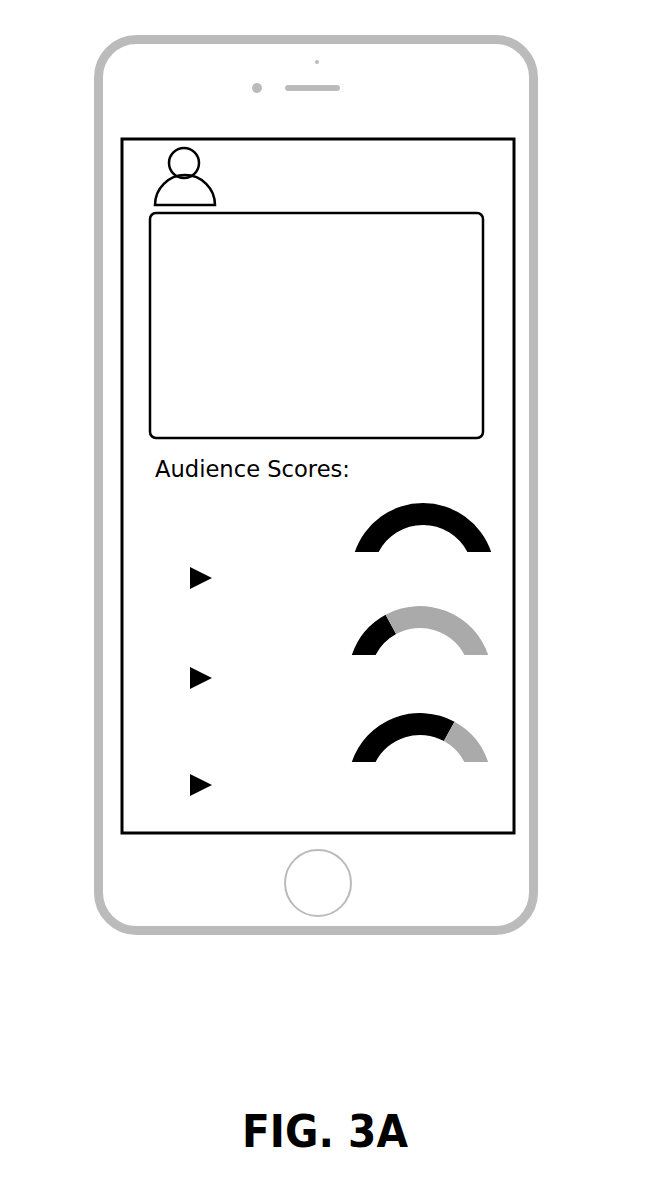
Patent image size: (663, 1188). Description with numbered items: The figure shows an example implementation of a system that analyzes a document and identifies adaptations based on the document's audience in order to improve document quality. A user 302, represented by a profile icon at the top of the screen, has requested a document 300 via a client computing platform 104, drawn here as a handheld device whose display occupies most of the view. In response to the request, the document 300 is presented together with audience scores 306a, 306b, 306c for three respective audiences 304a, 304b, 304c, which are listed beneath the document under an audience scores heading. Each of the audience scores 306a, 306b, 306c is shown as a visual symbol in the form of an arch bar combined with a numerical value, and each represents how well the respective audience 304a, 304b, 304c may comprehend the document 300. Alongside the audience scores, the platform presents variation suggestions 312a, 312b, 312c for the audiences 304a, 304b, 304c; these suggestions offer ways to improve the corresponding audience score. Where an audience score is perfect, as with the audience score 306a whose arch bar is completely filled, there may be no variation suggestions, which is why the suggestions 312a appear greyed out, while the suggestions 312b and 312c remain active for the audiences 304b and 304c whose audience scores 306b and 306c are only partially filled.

The client computing platform 104 is at (515, 48).
The document 300 is at (316, 325).
The user 302 is at (163, 182).
The audience 304a is at (238, 530).
The audience 304b is at (235, 634).
The audience 304c is at (235, 739).
The audience score 306a is at (483, 530).
The audience score 306b is at (482, 638).
The audience score 306c is at (482, 742).
The suggestions 312a is at (302, 577).
The suggestions 312b is at (302, 680).
The suggestions 312c is at (302, 787).